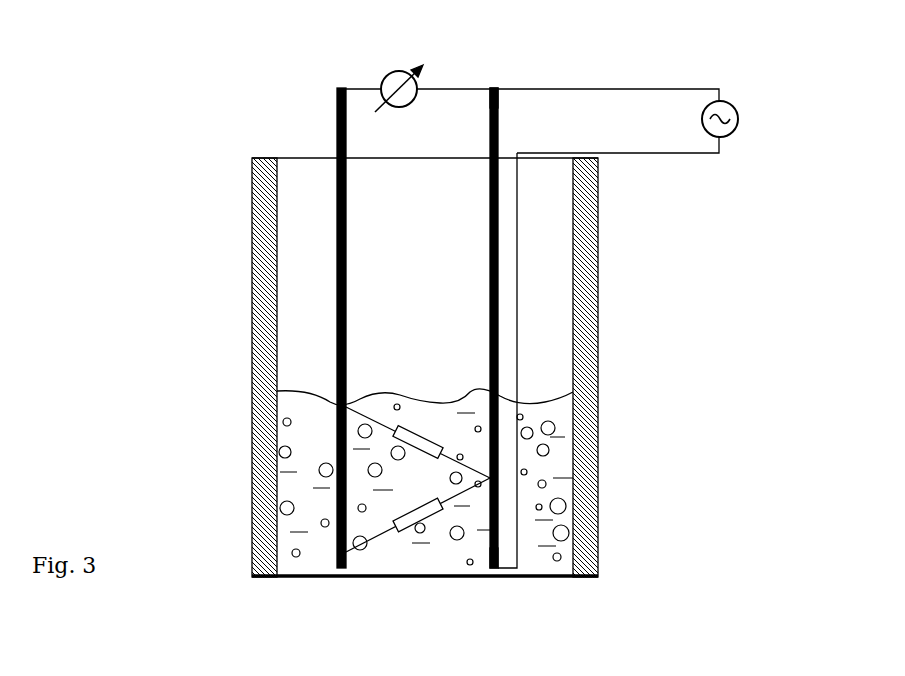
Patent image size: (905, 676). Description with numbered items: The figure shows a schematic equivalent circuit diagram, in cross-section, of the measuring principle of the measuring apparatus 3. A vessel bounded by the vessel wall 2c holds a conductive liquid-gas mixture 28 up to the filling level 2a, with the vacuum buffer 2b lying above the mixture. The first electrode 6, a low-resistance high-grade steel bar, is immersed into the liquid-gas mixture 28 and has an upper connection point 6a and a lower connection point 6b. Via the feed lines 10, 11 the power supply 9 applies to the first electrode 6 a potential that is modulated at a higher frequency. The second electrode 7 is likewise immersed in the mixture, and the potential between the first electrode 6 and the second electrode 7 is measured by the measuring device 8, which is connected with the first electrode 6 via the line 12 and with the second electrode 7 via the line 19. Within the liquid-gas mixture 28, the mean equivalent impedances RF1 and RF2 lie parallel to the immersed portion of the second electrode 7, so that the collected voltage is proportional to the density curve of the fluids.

The measuring apparatus 3 is at (215, 120).
The filling level 2a is at (277, 390).
The vacuum buffer 2b is at (297, 285).
The vessel wall 2c is at (262, 221).
The liquid-gas mixture 28 is at (285, 486).
The line 19 is at (363, 85).
The line 12 is at (457, 80).
The line 11 is at (572, 82).
The line 10 is at (658, 156).
The second electrode 7 is at (348, 307).
The first electrode 6 is at (488, 297).
The connection point 6a is at (498, 80).
The connection point 6b is at (497, 570).
The measuring device 8 is at (413, 105).
The power supply 9 is at (745, 117).
The mean equivalent impedance RF1 is at (418, 442).
The mean equivalent impedance RF2 is at (418, 515).